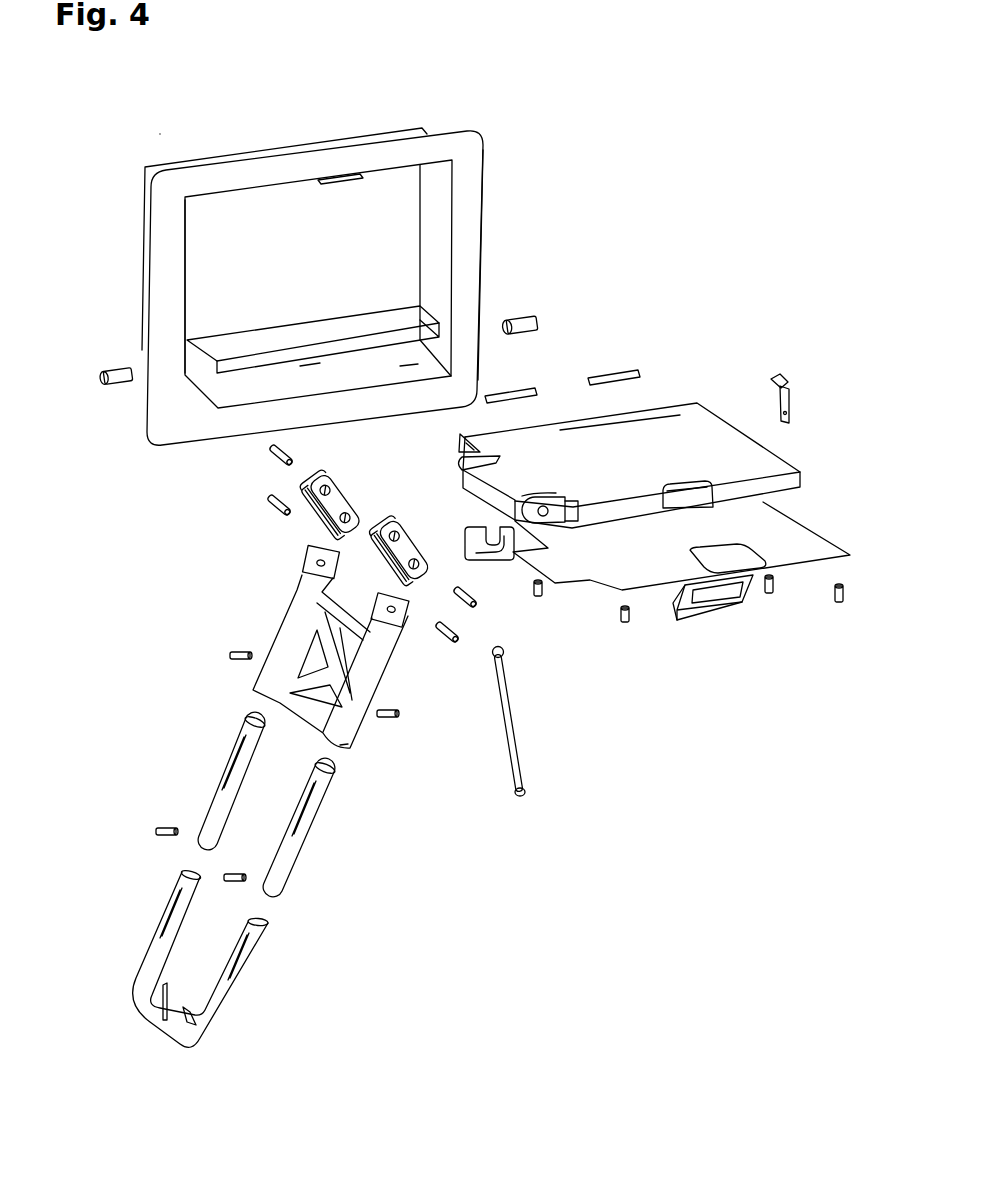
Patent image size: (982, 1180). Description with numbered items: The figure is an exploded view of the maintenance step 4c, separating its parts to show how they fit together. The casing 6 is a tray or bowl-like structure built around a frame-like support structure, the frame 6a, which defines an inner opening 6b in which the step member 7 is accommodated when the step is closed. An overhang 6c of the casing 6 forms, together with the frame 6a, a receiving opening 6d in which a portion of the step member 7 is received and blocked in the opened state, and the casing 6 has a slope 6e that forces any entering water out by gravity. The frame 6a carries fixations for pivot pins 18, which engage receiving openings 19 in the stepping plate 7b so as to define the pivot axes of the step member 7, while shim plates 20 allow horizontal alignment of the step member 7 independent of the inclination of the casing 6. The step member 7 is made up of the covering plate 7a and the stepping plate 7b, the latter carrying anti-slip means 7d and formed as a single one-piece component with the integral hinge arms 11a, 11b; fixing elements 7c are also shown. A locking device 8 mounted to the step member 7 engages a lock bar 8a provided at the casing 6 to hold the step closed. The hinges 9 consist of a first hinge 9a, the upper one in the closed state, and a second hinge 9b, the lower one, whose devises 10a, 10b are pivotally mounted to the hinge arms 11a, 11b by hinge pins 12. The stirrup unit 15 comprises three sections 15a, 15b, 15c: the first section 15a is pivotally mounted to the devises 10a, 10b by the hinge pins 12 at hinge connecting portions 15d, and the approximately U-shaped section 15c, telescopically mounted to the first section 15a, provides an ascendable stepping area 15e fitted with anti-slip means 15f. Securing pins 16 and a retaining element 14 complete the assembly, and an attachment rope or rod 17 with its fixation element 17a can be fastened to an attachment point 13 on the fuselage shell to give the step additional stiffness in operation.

The maintenance step 4c is at (152, 127).
The casing 6 is at (450, 128).
The frame 6a is at (492, 221).
The inner opening 6b is at (196, 251).
The overhang 6c is at (298, 352).
The receiving opening 6d is at (326, 360).
The slope 6e is at (409, 359).
The lock bar 8a is at (355, 200).
The step member 7 is at (680, 393).
The covering plate 7a is at (651, 575).
The stepping plate 7b is at (710, 437).
The fixing elements 7c is at (545, 598).
The anti-slip means 7d is at (725, 455).
The locking device 8 is at (726, 622).
The hinges 9 is at (432, 588).
The first hinge 9a is at (364, 566).
The second hinge 9b is at (300, 538).
The devise 10a is at (396, 546).
The devise 10b is at (326, 505).
The hinge arm 11a is at (557, 528).
The hinge arm 11b is at (456, 463).
The hinge pins 12 is at (268, 456).
The attachment point 13 is at (499, 570).
The retaining element 14 is at (802, 386).
The stirrup unit 15 is at (258, 1005).
The first section 15a is at (290, 645).
The second section of the stirrup unit 15b is at (300, 832).
The second section 15c is at (165, 952).
The hinge connecting portions 15d is at (295, 567).
The ascendable stepping area 15e is at (170, 988).
The anti-slip means 15f is at (183, 1030).
The securing pins 16 is at (235, 659).
The attachment rope or rod 17 is at (522, 746).
The fixation element 17a is at (360, 762).
The pivot pins 18 is at (108, 372).
The receiving openings 19 is at (456, 436).
The shim plates 20 is at (516, 378).